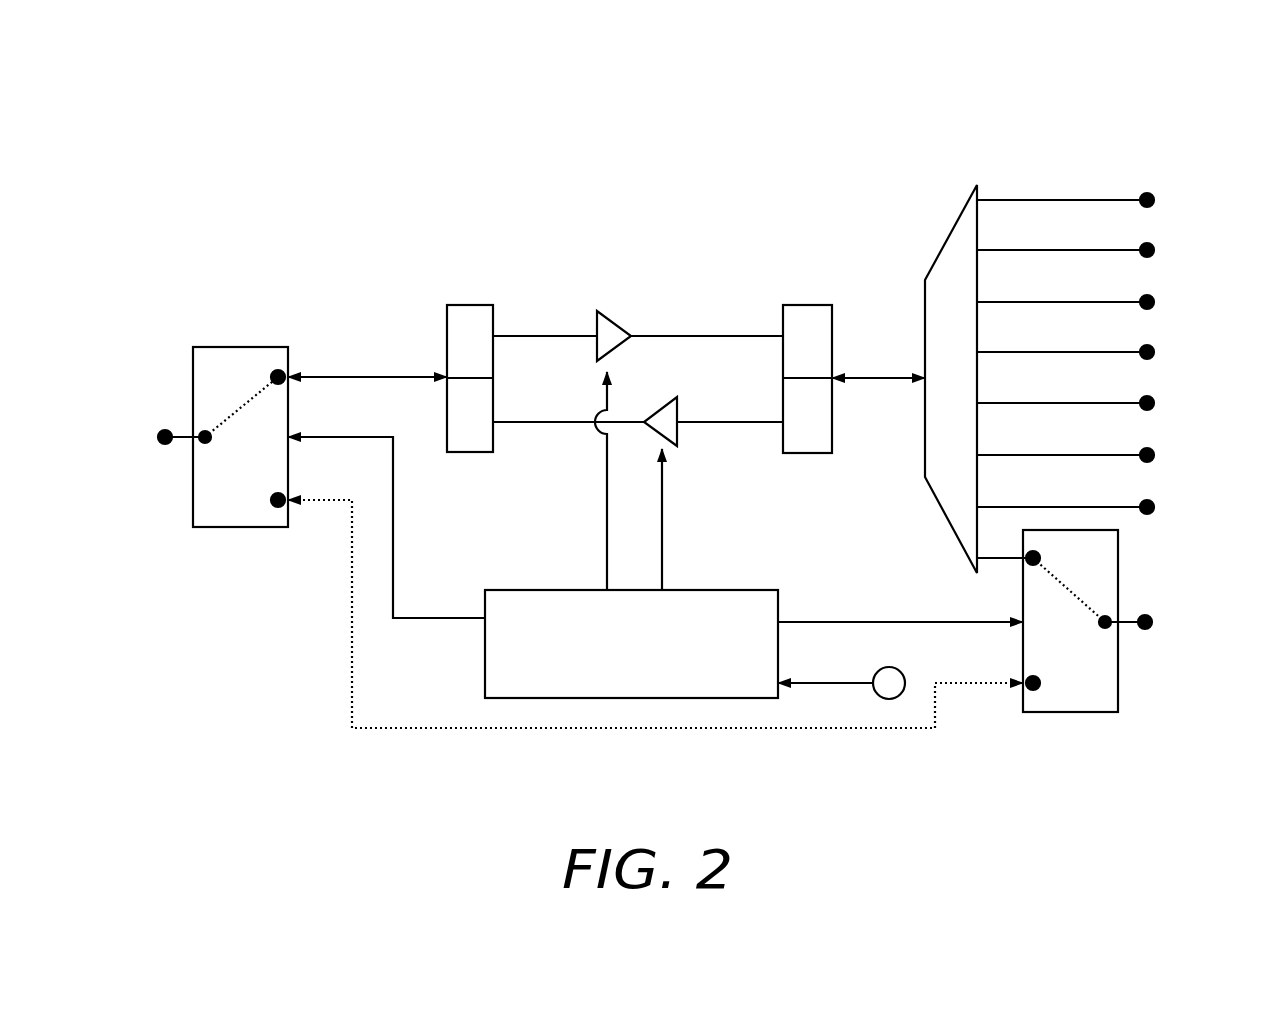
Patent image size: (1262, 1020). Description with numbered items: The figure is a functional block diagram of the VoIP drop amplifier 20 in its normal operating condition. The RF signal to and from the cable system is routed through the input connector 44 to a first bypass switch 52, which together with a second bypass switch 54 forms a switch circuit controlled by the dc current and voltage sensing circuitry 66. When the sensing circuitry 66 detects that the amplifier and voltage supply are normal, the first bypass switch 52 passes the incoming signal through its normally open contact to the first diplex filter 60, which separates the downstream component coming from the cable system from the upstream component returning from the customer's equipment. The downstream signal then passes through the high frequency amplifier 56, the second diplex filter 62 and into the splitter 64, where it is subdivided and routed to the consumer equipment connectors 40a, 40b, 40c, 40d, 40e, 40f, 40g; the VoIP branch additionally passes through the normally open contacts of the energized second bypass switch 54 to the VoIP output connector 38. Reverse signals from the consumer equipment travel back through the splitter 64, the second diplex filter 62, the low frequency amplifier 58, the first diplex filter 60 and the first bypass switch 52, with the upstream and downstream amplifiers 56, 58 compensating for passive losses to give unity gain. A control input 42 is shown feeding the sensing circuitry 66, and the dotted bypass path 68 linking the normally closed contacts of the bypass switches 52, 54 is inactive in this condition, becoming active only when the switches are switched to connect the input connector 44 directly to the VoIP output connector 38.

The VoIP drop amplifier 20 is at (403, 126).
The VoIP output connector 38 is at (1148, 612).
The connector 40a is at (1104, 201).
The connector 40b is at (1105, 251).
The connector 40c is at (1104, 303).
The connector 40d is at (1105, 353).
The connector 40e is at (1104, 404).
The connector 40f is at (1102, 456).
The connector 40g is at (1105, 508).
The control input 42 is at (893, 668).
The input connector 44 is at (155, 435).
The first bypass switch 52 is at (193, 505).
The second bypass switch 54 is at (1118, 690).
The upstream amplifier 56 is at (612, 318).
The downstream amplifier 58 is at (677, 432).
The first diplex filter 60 is at (447, 325).
The second diplex filter 62 is at (810, 453).
The splitter 64 is at (953, 223).
The dc current and voltage sensing circuitry 66 is at (553, 590).
The bypass path 68 is at (405, 728).